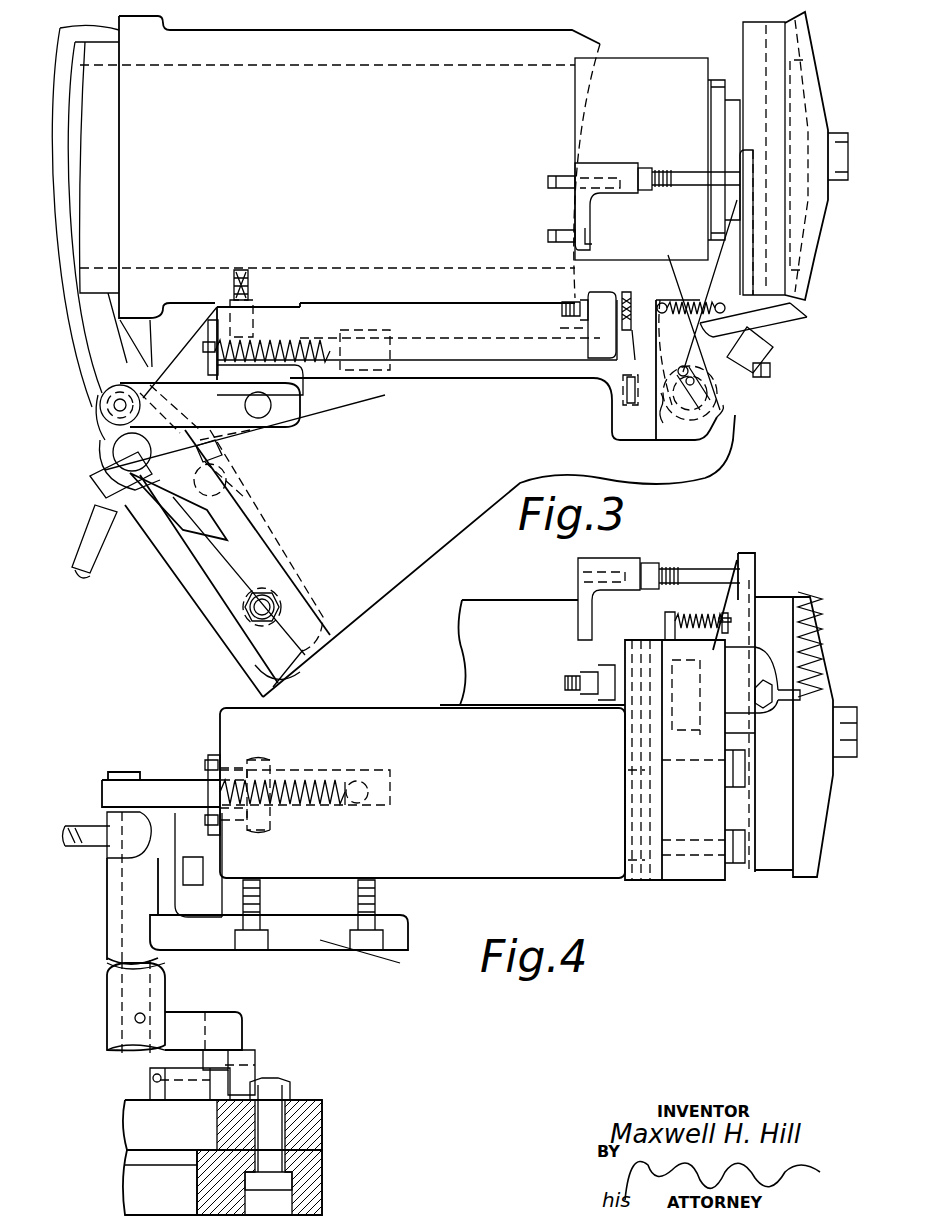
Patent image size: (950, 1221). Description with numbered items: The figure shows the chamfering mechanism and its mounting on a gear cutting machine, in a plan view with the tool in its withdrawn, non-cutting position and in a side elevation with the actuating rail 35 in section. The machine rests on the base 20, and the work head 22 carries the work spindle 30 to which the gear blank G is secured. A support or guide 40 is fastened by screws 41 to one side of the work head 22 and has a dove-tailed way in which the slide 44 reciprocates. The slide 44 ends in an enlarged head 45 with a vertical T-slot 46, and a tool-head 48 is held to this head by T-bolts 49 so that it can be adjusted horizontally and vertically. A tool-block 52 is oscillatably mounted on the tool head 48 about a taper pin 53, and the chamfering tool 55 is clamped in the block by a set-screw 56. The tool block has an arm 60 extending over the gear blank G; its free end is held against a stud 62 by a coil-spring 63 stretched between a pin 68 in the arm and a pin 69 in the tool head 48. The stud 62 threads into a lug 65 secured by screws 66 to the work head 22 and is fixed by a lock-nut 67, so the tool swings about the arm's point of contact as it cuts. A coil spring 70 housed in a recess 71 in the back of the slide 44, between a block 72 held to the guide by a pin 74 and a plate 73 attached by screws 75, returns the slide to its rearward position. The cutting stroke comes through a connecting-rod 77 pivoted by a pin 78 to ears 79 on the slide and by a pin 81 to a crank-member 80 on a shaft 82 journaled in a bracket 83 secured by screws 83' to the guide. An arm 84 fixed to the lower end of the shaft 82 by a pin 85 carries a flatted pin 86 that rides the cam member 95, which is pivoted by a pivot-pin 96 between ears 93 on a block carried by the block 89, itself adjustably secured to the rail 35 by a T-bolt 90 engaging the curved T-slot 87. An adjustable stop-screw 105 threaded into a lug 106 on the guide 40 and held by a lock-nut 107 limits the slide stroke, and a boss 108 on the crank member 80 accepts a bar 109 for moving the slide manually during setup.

In FIG. 3, the base 20 is at (499, 556).
In FIG. 4, the work head 22 is at (508, 605).
In FIG. 3, the work spindle 30 is at (655, 65).
In FIG. 4, the rail 35 is at (320, 1160).
In FIG. 3, the support or guide 40 is at (455, 303).
In FIG. 3, the screws 41 is at (253, 290).
In FIG. 3, the slide 44 is at (562, 382).
In FIG. 4, the slide 44 is at (422, 793).
In FIG. 3, the head 45 is at (650, 437).
In FIG. 4, the head 45 is at (656, 882).
In FIG. 3, the T-slot 46 is at (636, 410).
In FIG. 4, the T-slot 46 is at (626, 818).
In FIG. 3, the tool-head 48 is at (690, 432).
In FIG. 4, the tool-head 48 is at (705, 880).
In FIG. 3, the T-bolts 49 is at (676, 410).
In FIG. 4, the T-bolts 49 is at (685, 838).
In FIG. 3, the tool-block 52 is at (768, 350).
In FIG. 4, the tool-block 52 is at (748, 722).
In FIG. 3, the taper pin 53 is at (718, 408).
In FIG. 4, the taper pin 53 is at (700, 718).
In FIG. 3, the chamfering tool 55 is at (778, 320).
In FIG. 4, the chamfering tool 55 is at (783, 688).
In FIG. 3, the set-screw 56 is at (772, 366).
In FIG. 4, the set-screw 56 is at (768, 704).
In FIG. 3, the arm 60 is at (745, 195).
In FIG. 4, the arm 60 is at (758, 562).
In FIG. 3, the stud 62 is at (690, 180).
In FIG. 4, the stud 62 is at (700, 572).
In FIG. 3, the coil-spring 63 is at (688, 304).
In FIG. 4, the coil-spring 63 is at (698, 618).
In FIG. 3, the lug 65 is at (598, 165).
In FIG. 4, the lug 65 is at (603, 565).
In FIG. 3, the screws 66 is at (592, 236).
In FIG. 4, the screws 66 is at (598, 625).
In FIG. 3, the lock-nut 67 is at (645, 168).
In FIG. 4, the lock-nut 67 is at (655, 565).
In FIG. 3, the pin 68 is at (720, 305).
In FIG. 4, the pin 68 is at (727, 618).
In FIG. 3, the pin 69 is at (660, 307).
In FIG. 4, the pin 69 is at (668, 618).
In FIG. 3, the coil spring 70 is at (305, 340).
In FIG. 4, the coil spring 70 is at (315, 778).
In FIG. 4, the recess 71 is at (390, 772).
In FIG. 4, the block 72 is at (358, 778).
In FIG. 3, the plate 73 is at (212, 338).
In FIG. 4, the plate 73 is at (212, 745).
In FIG. 3, the pin 74 is at (360, 332).
In FIG. 4, the pin 74 is at (352, 807).
In FIG. 3, the screws 75 is at (210, 358).
In FIG. 4, the screws 75 is at (207, 763).
In FIG. 3, the connecting-rod 77 is at (210, 408).
In FIG. 4, the connecting-rod 77 is at (162, 790).
In FIG. 3, the pin 78 is at (270, 407).
In FIG. 4, the pin 78 is at (268, 757).
In FIG. 3, the ears 79 is at (292, 393).
In FIG. 4, the ears 79 is at (240, 762).
In FIG. 3, the crank-member 80 is at (97, 427).
In FIG. 4, the crank-member 80 is at (170, 836).
In FIG. 3, the pin 81 is at (120, 398).
In FIG. 3, the shaft 82 is at (128, 448).
In FIG. 4, the shaft 82 is at (125, 918).
In FIG. 4, the bracket 83 is at (279, 934).
In FIG. 4, the screws 83' is at (365, 959).
In FIG. 3, the arm 84 is at (175, 515).
In FIG. 4, the arm 84 is at (196, 1016).
In FIG. 4, the pin 85 is at (135, 1020).
In FIG. 3, the pin 86 is at (225, 478).
In FIG. 4, the pin 86 is at (203, 1058).
In FIG. 4, the T-slot 87 is at (292, 1188).
In FIG. 3, the block 89 is at (252, 648).
In FIG. 4, the block 89 is at (305, 1120).
In FIG. 3, the T-bolt 90 is at (245, 613).
In FIG. 4, the T-bolt 90 is at (280, 1100).
In FIG. 4, the ears 93 is at (150, 1093).
In FIG. 3, the cam member 95 is at (190, 535).
In FIG. 4, the cam member 95 is at (252, 1057).
In FIG. 4, the pivot-pin 96 is at (150, 1075).
In FIG. 3, the stop-screw 105 is at (627, 292).
In FIG. 3, the lug 106 is at (585, 300).
In FIG. 3, the lock-nut 107 is at (578, 318).
In FIG. 3, the boss 108 is at (100, 490).
In FIG. 4, the boss 108 is at (104, 815).
In FIG. 3, the bar 109 is at (85, 572).
In FIG. 4, the bar 109 is at (90, 845).
In FIG. 3, the gear blank G is at (808, 285).
In FIG. 4, the gear blank G is at (812, 855).